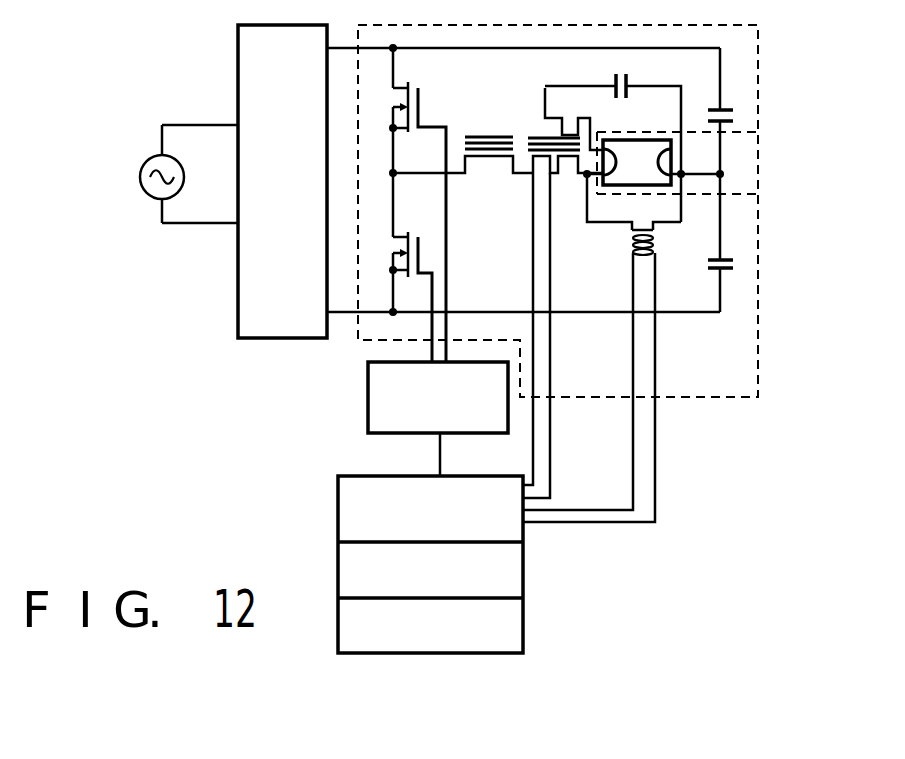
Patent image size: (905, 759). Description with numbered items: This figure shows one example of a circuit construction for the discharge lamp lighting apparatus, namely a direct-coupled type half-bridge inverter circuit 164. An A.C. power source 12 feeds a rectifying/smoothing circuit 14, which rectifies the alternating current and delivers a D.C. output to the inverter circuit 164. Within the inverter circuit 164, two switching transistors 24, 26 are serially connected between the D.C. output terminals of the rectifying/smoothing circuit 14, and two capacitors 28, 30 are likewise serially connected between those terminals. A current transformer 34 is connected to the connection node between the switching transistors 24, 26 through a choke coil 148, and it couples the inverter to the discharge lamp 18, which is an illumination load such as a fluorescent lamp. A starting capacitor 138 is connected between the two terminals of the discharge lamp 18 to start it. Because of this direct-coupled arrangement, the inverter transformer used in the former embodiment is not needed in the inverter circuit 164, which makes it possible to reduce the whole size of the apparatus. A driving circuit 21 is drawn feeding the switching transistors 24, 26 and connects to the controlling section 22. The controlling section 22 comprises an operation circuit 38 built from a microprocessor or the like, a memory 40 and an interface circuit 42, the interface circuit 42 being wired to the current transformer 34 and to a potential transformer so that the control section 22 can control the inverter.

The A.C. power source 12 is at (140, 178).
The rectifying/smoothing circuit 14 is at (238, 292).
The inverter circuit 164 is at (760, 37).
The switching transistor 24 is at (414, 86).
The switching transistor 26 is at (413, 233).
The choke coil 148 is at (490, 131).
The current transformer 34 is at (540, 131).
The starting capacitor 138 is at (643, 64).
The discharge lamp 18 is at (642, 148).
The capacitor 28 is at (730, 104).
The capacitor 30 is at (735, 265).
The driving circuit 21 is at (368, 388).
The controlling section 22 is at (432, 567).
The interface circuit 42 is at (338, 508).
The memory 40 is at (525, 572).
The operation circuit 38 is at (525, 630).